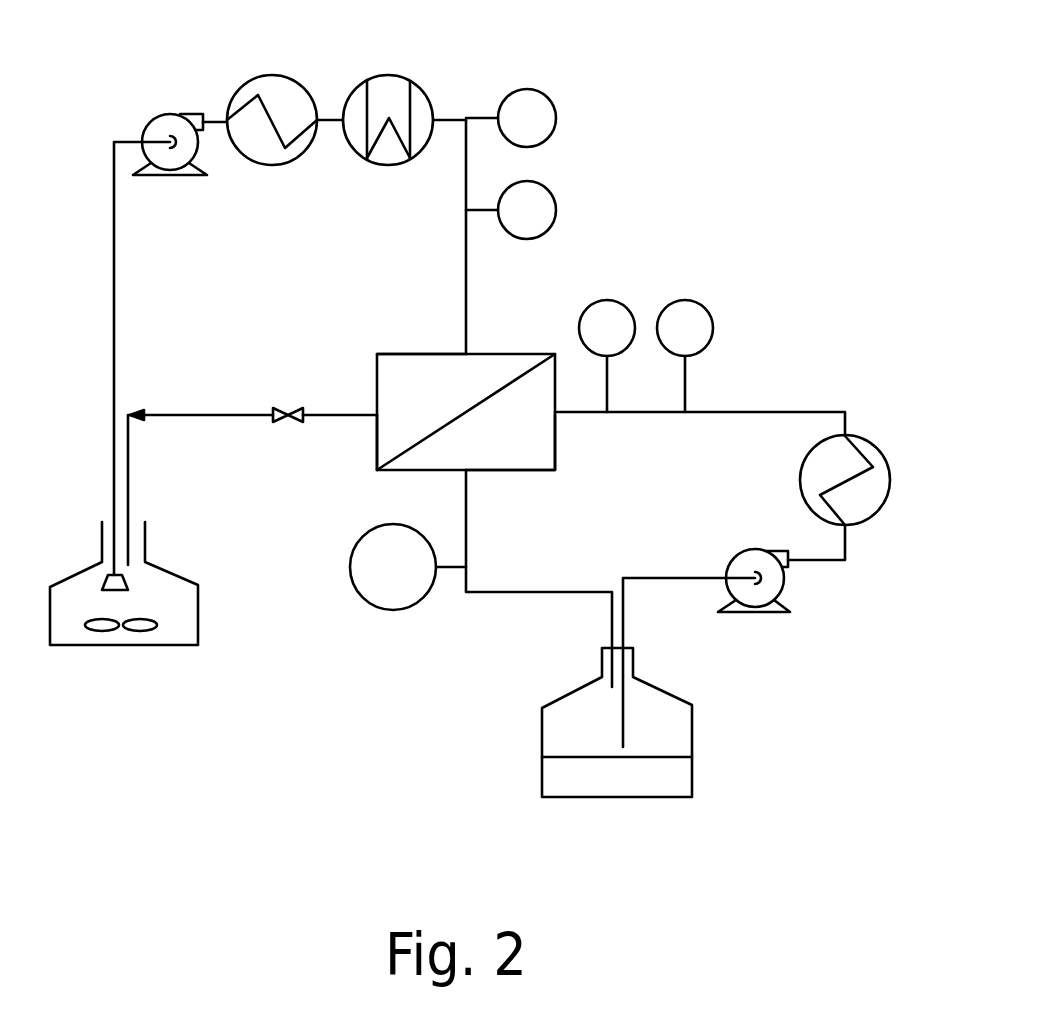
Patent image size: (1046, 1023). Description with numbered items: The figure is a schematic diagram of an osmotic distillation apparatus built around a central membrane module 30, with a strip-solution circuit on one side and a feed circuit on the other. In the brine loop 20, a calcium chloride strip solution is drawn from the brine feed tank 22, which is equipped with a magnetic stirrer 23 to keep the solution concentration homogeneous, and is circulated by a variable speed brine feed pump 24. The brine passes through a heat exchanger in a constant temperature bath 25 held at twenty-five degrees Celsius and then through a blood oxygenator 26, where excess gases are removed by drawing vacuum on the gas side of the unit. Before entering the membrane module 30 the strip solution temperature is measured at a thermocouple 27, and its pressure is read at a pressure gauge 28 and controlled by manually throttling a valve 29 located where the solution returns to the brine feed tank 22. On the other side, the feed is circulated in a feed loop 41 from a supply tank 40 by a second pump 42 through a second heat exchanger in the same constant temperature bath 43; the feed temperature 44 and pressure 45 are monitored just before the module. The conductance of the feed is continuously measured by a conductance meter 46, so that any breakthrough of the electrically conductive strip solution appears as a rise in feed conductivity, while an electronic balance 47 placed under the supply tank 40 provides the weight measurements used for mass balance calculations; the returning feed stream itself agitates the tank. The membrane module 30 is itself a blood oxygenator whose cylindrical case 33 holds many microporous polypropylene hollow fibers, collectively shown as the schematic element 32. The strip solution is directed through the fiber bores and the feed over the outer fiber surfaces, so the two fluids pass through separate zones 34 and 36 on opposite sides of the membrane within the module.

The brine loop 20 is at (113, 330).
The brine feed tank 22 is at (168, 570).
The magnetic stirrer 23 is at (143, 628).
The brine feed pump 24 is at (147, 123).
The constant temperature bath 25 is at (288, 77).
The blood oxygenator 26 is at (437, 90).
The thermocouple 27 is at (528, 89).
The pressure gauge 28 is at (556, 218).
The valve 29 is at (300, 405).
The membrane module 30 is at (497, 352).
The hollow fibers 32 is at (442, 428).
The cylindrical case 33 is at (375, 432).
The zone 34 is at (433, 370).
The zone 36 is at (525, 452).
The supply tank 40 is at (658, 687).
The feed loop 41 is at (820, 560).
The pump 42 is at (727, 563).
The constant temperature bath 43 is at (887, 460).
The temperature 44 is at (713, 328).
The pressure 45 is at (635, 330).
The conductance meter 46 is at (412, 610).
The electronic balance 47 is at (693, 782).